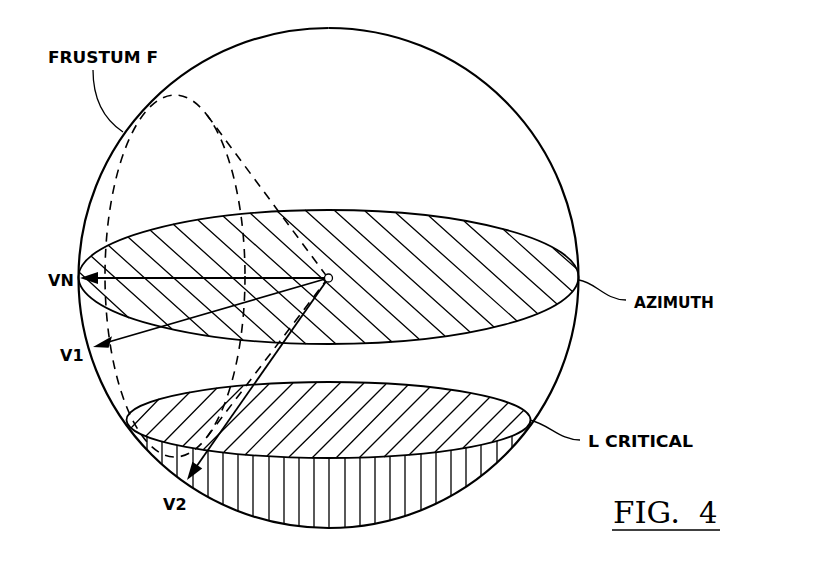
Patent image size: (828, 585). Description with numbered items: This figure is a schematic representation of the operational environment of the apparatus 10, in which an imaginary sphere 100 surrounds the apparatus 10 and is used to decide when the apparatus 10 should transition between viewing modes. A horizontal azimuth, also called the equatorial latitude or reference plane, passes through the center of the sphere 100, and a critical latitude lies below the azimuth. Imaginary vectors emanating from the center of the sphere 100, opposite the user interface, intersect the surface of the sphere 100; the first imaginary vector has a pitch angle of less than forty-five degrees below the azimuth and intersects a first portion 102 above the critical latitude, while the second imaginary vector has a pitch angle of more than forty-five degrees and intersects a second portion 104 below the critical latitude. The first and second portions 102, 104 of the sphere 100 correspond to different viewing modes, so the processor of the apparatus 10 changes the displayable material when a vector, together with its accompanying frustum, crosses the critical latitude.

The apparatus 10 is at (330, 275).
The sphere 100 is at (568, 200).
The first portion 102 is at (490, 85).
The second portion 104 is at (430, 507).